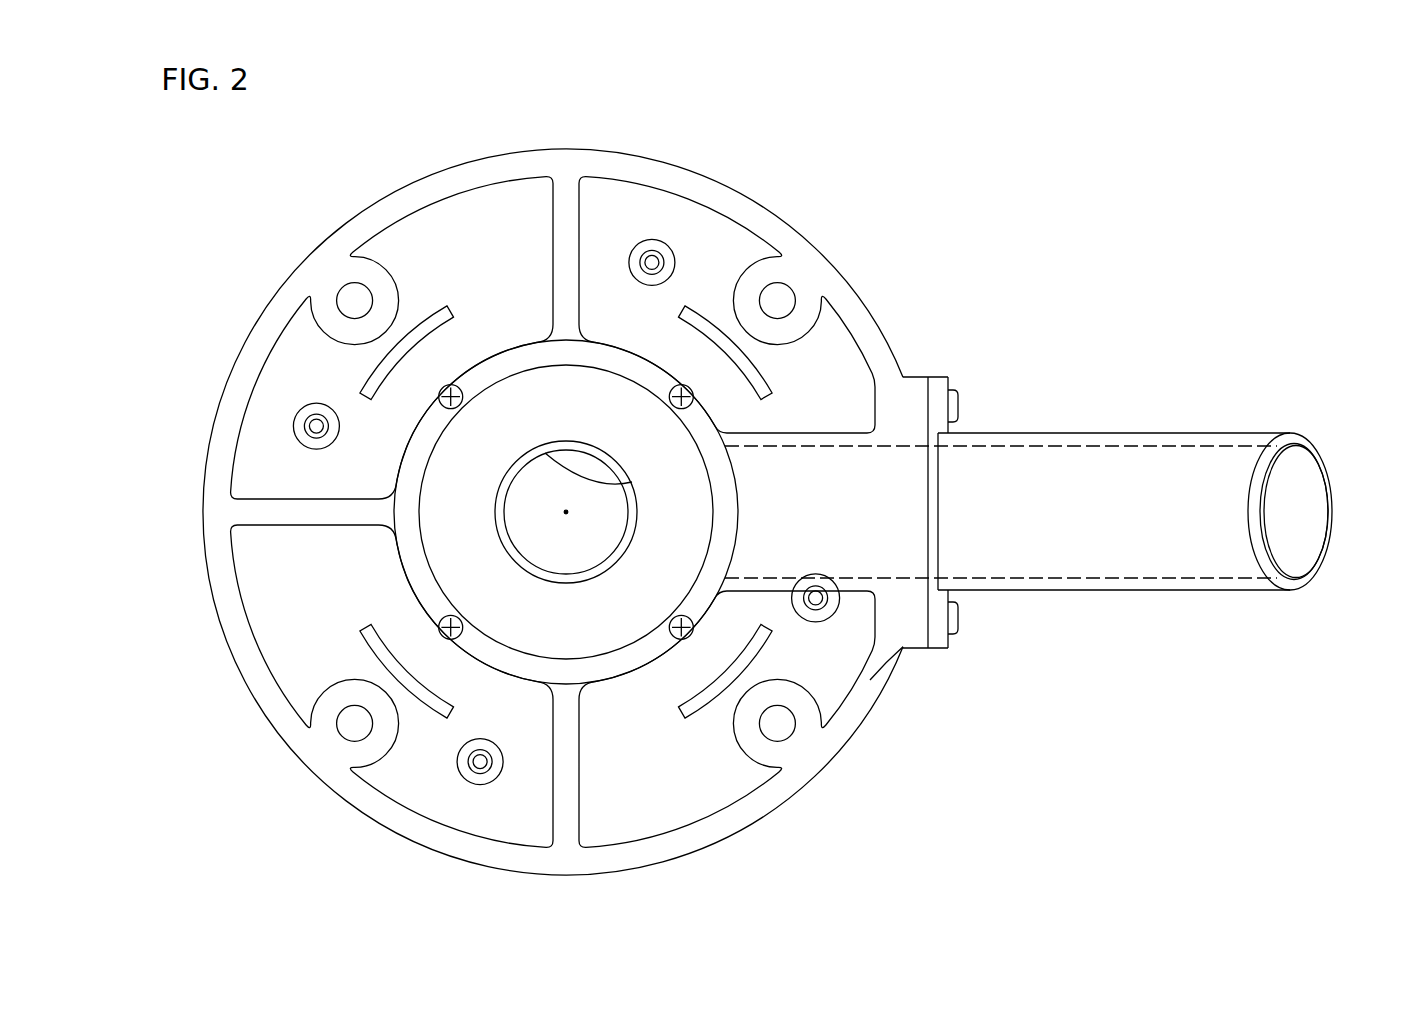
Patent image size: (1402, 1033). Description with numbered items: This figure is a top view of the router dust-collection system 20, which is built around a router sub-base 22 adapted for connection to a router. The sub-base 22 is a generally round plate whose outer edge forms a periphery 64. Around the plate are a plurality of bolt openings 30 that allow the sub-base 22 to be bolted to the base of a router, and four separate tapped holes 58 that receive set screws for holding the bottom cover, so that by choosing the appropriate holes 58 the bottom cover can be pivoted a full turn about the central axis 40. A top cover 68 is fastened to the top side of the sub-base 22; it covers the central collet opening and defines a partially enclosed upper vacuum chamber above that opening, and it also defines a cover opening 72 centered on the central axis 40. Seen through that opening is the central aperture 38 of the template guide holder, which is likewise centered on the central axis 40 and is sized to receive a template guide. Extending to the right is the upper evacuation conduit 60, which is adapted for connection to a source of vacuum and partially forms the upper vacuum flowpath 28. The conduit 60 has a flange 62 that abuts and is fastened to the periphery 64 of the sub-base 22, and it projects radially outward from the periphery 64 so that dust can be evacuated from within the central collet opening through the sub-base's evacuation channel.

The router dust-collection system 20 is at (742, 531).
The router sub-base 22 is at (770, 825).
The upper vacuum flowpath 28 is at (1076, 440).
The bolt openings 30 is at (788, 286).
The central aperture 38 is at (621, 486).
The central axis 40 is at (567, 512).
The tapped holes 58 is at (313, 425).
The upper evacuation conduit 60 is at (1205, 432).
The flange 62 is at (950, 377).
The periphery 64 is at (895, 667).
The top cover 68 is at (512, 378).
The cover opening 72 is at (596, 445).